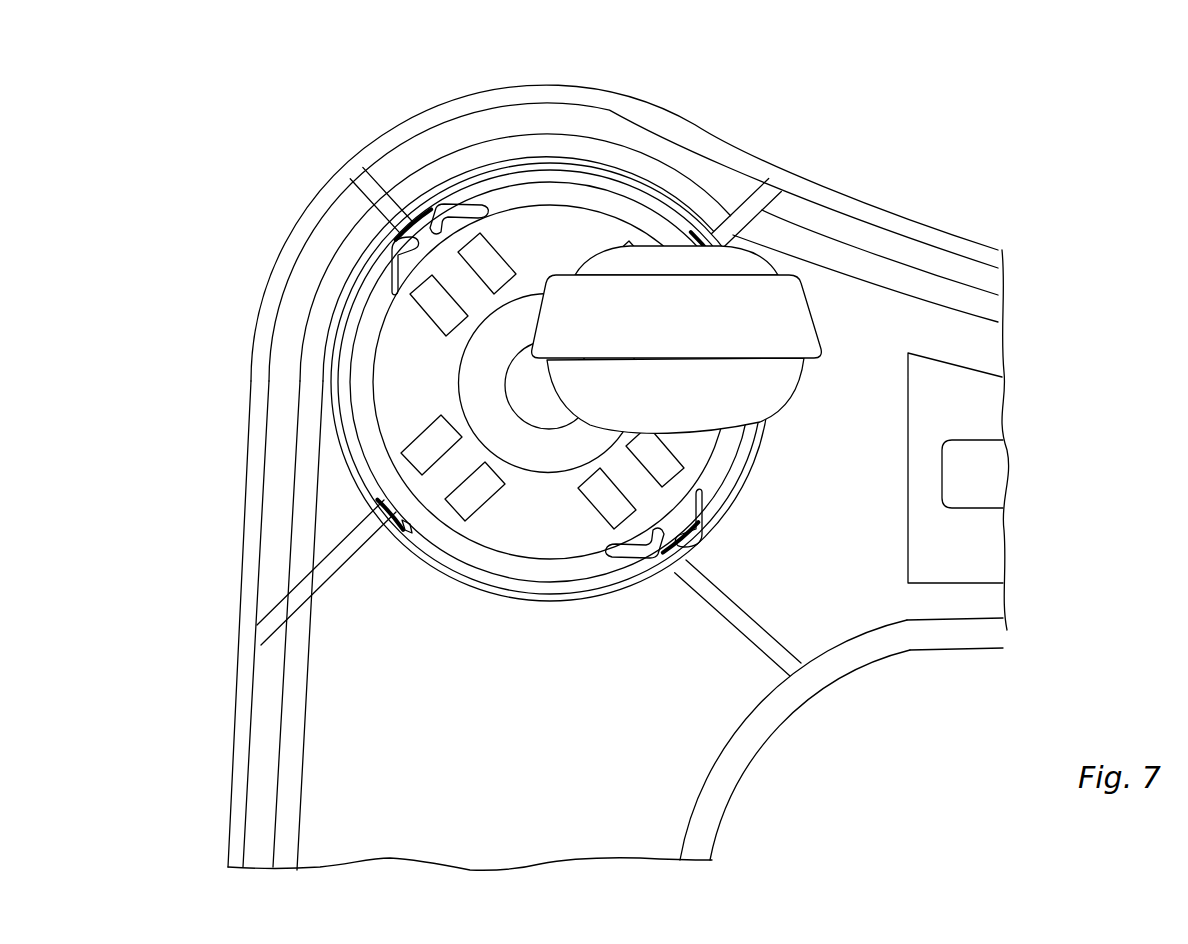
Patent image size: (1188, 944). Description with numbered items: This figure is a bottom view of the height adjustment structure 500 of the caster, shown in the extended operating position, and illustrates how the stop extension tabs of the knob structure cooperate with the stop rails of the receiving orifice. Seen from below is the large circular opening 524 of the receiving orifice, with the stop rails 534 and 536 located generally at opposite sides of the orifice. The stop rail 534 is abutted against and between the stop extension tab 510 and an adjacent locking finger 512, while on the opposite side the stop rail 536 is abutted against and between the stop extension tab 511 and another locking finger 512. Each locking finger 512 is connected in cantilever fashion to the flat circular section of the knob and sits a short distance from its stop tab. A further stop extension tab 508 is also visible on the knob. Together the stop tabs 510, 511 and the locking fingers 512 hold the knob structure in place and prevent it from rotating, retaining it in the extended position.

The height adjustment structure 500 is at (903, 136).
The stop extension tab 508 is at (402, 523).
The stop extension tab 510 is at (676, 560).
The stop extension tab 511 is at (420, 222).
The locking finger 512 is at (392, 258).
The large circular opening 524 is at (517, 593).
The stop rail 534 is at (718, 520).
The stop rail 536 is at (397, 250).